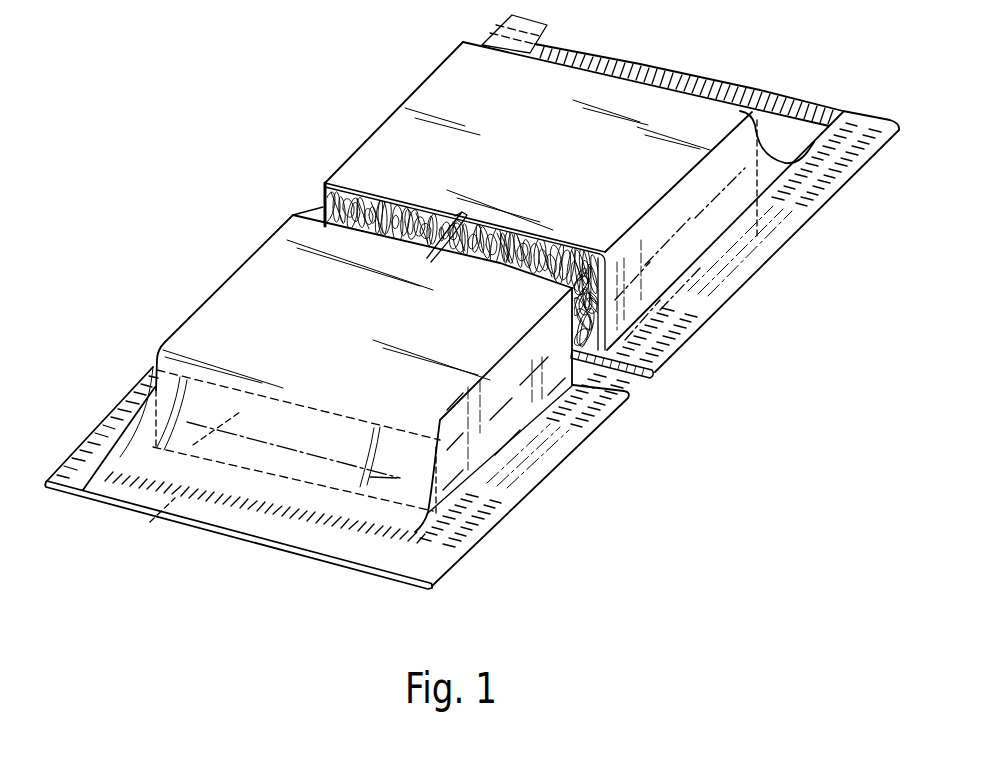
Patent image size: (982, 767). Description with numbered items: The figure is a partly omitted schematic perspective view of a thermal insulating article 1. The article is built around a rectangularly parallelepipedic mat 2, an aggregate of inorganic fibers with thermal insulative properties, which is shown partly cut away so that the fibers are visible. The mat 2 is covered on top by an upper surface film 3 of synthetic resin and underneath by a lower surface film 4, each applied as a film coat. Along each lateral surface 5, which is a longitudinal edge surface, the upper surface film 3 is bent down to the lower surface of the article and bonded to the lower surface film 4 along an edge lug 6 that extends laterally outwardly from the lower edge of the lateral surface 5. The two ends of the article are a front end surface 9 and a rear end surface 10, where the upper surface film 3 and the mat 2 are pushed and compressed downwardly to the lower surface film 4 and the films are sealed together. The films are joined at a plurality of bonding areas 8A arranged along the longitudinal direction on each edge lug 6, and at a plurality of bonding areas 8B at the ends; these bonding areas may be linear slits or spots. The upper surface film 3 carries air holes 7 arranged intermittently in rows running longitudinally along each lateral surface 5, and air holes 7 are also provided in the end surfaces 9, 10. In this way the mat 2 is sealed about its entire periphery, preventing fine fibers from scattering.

The thermal insulating article 1 is at (390, 50).
The mat 2 is at (360, 210).
The upper surface film 3 is at (386, 156).
The lower surface film 4 is at (357, 574).
The lateral surface 5 is at (797, 250).
The edge lug 6 is at (105, 442).
The air hole 7 is at (275, 480).
The bonding area 8A is at (665, 345).
The bonding area 8B is at (595, 63).
The front end surface 9 is at (150, 522).
The rear end surface 10 is at (785, 105).